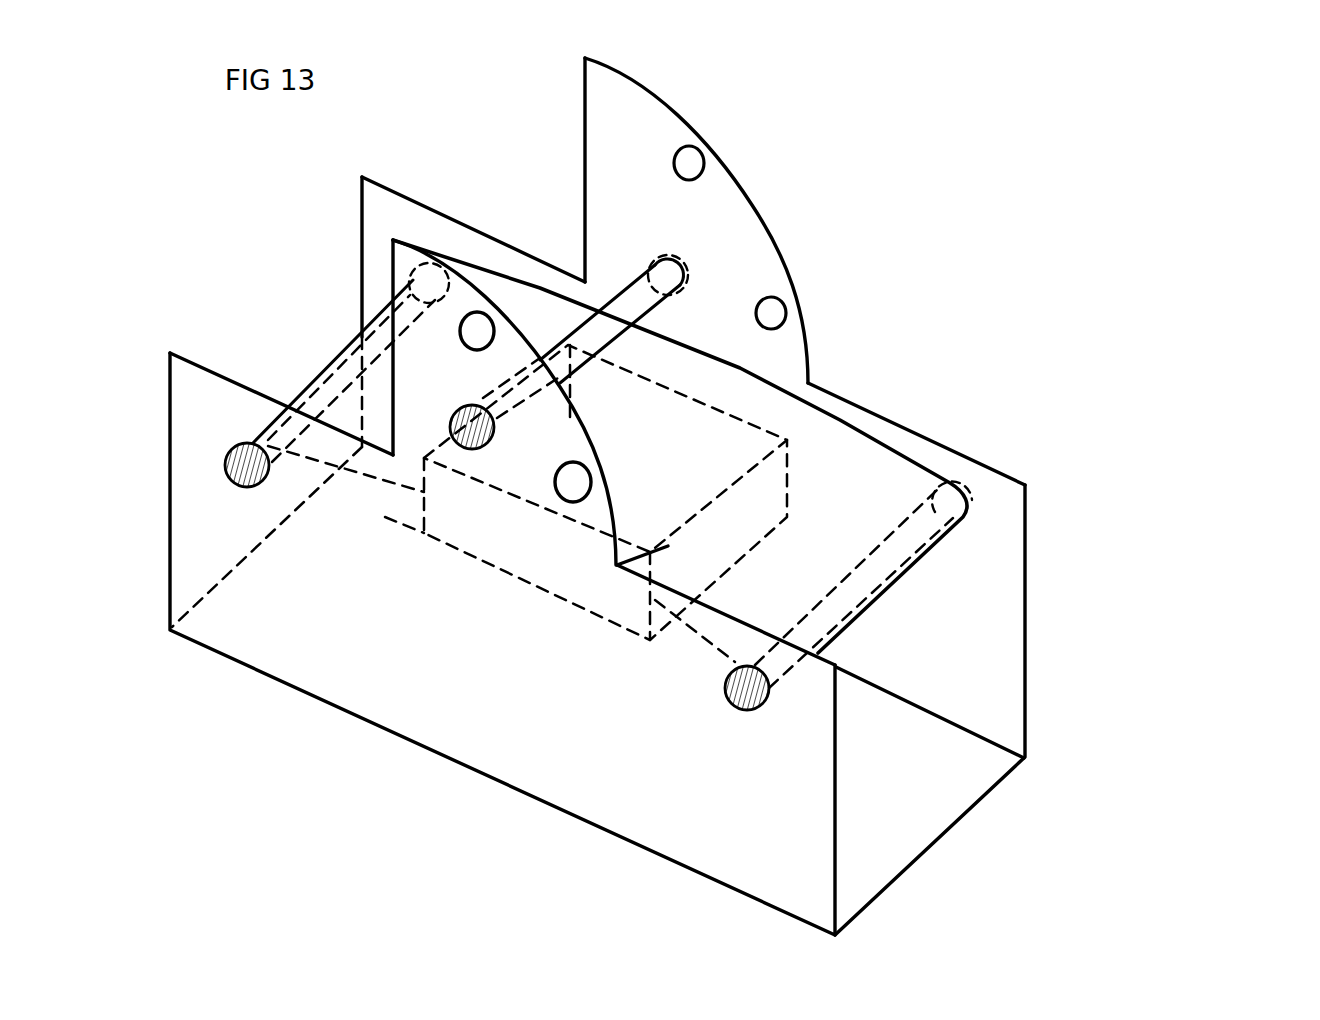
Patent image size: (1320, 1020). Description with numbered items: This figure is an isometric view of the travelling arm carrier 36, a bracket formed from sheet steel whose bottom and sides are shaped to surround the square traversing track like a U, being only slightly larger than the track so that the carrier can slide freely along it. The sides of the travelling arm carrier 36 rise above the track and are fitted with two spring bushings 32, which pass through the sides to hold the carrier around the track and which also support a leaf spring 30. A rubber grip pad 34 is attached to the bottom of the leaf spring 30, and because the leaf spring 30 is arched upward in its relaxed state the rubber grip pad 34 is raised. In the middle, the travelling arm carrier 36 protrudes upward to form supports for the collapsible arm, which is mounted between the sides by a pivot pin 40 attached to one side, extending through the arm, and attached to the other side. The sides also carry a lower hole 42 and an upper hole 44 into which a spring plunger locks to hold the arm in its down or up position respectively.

The leaf spring 30 is at (818, 522).
The spring bushings 32 is at (238, 475).
The rubber grip pad 34 is at (653, 477).
The travelling arm carrier 36 is at (1157, 886).
The pivot pin 40 is at (580, 338).
The lower hole 42 is at (773, 308).
The upper hole 44 is at (693, 163).